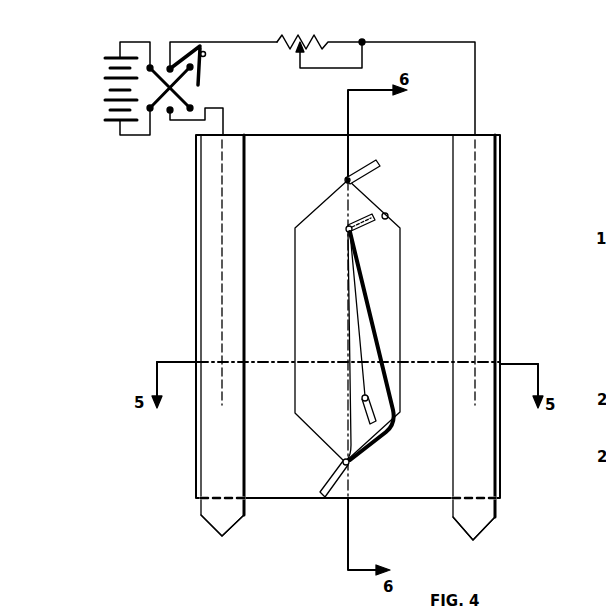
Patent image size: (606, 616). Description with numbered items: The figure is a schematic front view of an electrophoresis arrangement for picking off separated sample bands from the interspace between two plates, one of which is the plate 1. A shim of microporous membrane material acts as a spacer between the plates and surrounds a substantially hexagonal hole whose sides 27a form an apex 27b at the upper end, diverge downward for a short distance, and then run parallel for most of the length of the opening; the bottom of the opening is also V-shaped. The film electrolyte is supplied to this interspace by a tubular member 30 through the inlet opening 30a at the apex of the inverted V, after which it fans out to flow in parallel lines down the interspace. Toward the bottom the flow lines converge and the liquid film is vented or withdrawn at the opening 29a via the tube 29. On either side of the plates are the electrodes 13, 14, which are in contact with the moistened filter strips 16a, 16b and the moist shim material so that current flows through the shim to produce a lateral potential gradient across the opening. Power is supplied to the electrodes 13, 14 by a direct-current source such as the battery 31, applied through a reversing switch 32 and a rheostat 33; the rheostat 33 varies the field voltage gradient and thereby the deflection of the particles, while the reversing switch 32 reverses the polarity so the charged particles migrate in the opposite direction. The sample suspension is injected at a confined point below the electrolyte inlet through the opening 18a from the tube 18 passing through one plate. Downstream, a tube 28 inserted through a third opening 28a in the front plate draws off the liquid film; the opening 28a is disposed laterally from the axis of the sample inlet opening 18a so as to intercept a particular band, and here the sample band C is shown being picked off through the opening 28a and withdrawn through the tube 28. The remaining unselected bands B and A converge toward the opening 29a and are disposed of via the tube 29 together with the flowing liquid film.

The plate 1 is at (500, 170).
The electrode 13 is at (222, 283).
The electrode 14 is at (476, 312).
The filter strip 16a is at (230, 528).
The filter strip 16b is at (479, 532).
The sample injection tube 18 is at (368, 222).
The sample inlet opening 18a is at (347, 232).
The sides of the shim opening 27a is at (388, 216).
The apex 27b is at (346, 178).
The withdrawal tube 28 is at (376, 418).
The third opening 28a is at (368, 397).
The outlet tube 29 is at (324, 490).
The outlet opening 29a is at (344, 458).
The tubular member 30 is at (378, 167).
The electrolyte inlet opening 30a is at (348, 185).
The battery 31 is at (108, 56).
The reversing switch 32 is at (180, 124).
The rheostat 33 is at (322, 40).
The sample band A is at (348, 313).
The sample band B is at (372, 322).
The sample band C is at (358, 340).